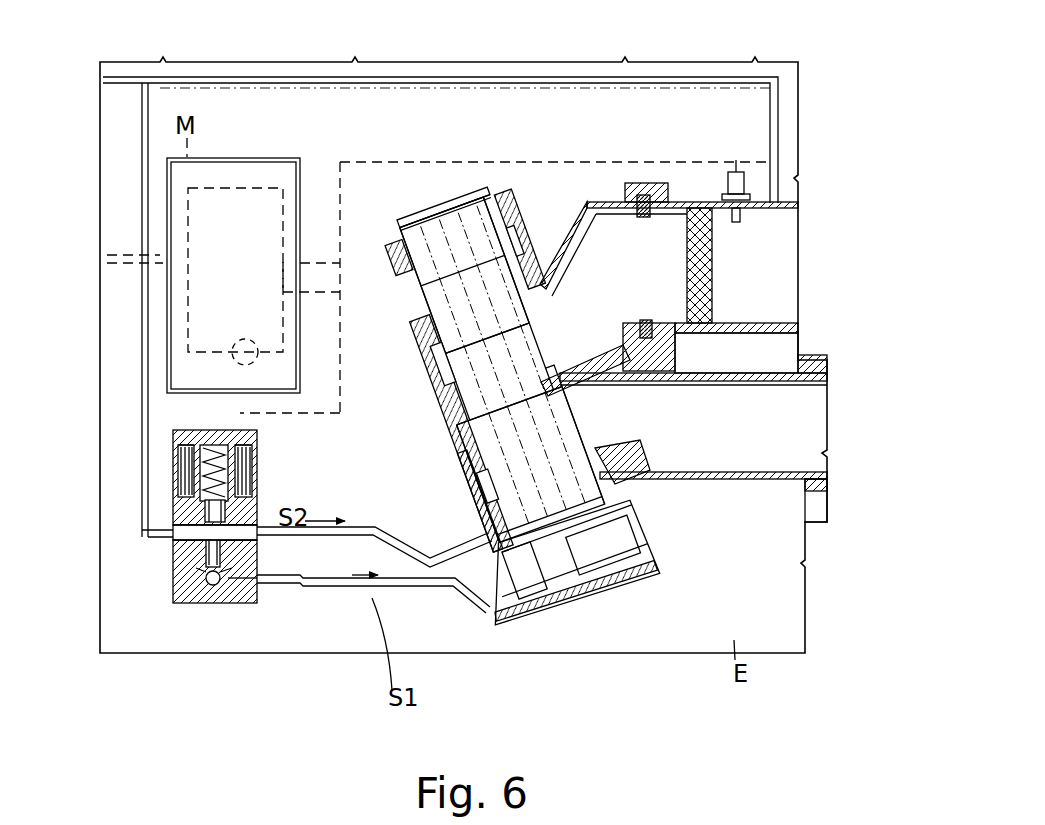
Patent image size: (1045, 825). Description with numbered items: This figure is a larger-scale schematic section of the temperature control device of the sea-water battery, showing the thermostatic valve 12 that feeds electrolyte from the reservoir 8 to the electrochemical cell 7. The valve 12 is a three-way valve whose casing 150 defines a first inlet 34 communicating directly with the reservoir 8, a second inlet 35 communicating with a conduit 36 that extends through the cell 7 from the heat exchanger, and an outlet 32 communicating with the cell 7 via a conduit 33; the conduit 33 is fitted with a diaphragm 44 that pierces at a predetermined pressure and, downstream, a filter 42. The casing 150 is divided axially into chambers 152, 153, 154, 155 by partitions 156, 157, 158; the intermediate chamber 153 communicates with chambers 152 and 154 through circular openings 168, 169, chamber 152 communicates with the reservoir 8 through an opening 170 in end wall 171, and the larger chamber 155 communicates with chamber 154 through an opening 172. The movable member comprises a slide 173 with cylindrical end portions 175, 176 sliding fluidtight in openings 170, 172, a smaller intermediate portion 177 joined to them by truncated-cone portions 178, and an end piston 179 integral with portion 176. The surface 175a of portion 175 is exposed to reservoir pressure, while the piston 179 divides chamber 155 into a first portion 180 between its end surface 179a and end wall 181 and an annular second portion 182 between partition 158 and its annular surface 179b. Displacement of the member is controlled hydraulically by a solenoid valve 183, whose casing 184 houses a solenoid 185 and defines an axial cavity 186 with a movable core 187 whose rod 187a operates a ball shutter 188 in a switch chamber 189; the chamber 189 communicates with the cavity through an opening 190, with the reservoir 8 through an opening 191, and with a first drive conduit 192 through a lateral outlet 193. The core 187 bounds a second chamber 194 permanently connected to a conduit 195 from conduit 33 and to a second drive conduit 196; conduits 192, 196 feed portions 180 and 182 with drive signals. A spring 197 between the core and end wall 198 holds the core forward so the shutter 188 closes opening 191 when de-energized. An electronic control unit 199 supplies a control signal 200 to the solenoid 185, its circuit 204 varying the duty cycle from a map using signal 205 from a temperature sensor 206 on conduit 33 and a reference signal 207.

The electrochemical cell 7 is at (816, 510).
The reservoir 8 is at (362, 643).
The thermostatic valve 12 is at (581, 632).
The outlet 32 is at (655, 403).
The conduit 33 is at (760, 330).
The first inlet 34 is at (420, 316).
The second inlet 35 is at (582, 480).
The conduit 36 is at (797, 392).
The filter 42 is at (766, 305).
The diaphragm 44 is at (683, 250).
The casing 150 is at (468, 477).
The chamber 152 is at (517, 228).
The intermediate chamber 153 is at (470, 361).
The chamber 154 is at (478, 506).
The chamber 155 is at (624, 545).
The partition 156 is at (536, 300).
The partition 157 is at (565, 391).
The partition 158 is at (652, 460).
The circular opening 168 is at (456, 313).
The circular opening 169 is at (552, 387).
The circular opening 170 is at (411, 258).
The end wall 171 is at (391, 256).
The circular opening 172 is at (590, 469).
The slide 173 is at (545, 330).
The cylindrical end portion 175 is at (475, 210).
The surface 175a is at (468, 192).
The cylindrical end portion 176 is at (600, 592).
The intermediate cylindrical portion 177 is at (470, 385).
The truncated-cone-shaped portion 178 is at (530, 326).
The end piston 179 is at (558, 560).
The axial end surface 179a is at (626, 592).
The annular surface 179b is at (480, 590).
The first portion 180 is at (682, 602).
The end wall 181 is at (526, 620).
The annular second portion 182 is at (762, 505).
The solenoid valve 183 is at (251, 612).
The casing 184 is at (185, 615).
The solenoid 185 is at (186, 490).
The axial cavity 186 is at (219, 452).
The movable core 187 is at (203, 538).
The rod 187a is at (236, 575).
The ball shutter 188 is at (211, 606).
The switch chamber 189 is at (200, 606).
The opening 190 is at (207, 581).
The opening 191 is at (217, 606).
The first drive conduit 192 is at (332, 590).
The lateral outlet 193 is at (243, 592).
The second chamber 194 is at (203, 560).
The conduit 195 is at (146, 324).
The second drive conduit 196 is at (356, 522).
The spring 197 is at (183, 465).
The end wall 198 is at (196, 452).
The electronic control unit 199 is at (235, 185).
The control signal 200 is at (336, 362).
The processing and control circuit 204 is at (261, 362).
The signal 205 is at (310, 253).
The temperature sensor 206 is at (745, 178).
The reference signal 207 is at (163, 253).